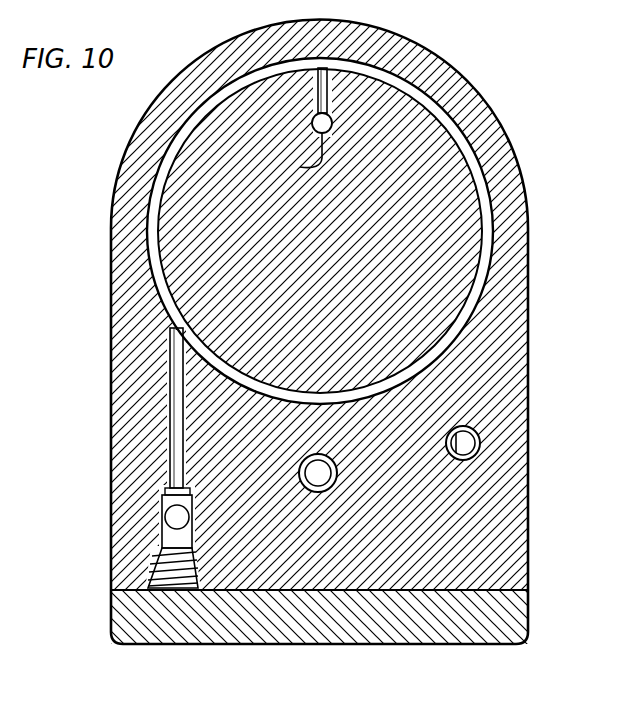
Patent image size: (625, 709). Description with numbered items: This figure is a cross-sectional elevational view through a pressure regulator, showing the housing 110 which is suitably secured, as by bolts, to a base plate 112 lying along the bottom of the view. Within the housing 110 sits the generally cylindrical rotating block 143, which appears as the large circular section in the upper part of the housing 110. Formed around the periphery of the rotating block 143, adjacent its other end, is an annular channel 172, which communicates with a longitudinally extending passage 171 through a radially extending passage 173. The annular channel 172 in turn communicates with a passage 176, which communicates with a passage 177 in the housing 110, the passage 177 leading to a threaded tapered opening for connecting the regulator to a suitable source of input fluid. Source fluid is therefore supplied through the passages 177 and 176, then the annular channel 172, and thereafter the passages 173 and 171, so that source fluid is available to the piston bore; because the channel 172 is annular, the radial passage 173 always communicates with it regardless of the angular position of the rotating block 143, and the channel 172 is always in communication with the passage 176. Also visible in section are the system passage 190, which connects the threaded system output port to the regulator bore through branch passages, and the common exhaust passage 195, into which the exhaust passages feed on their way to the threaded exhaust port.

The housing 110 is at (446, 77).
The base plate 112 is at (118, 608).
The rotating block 143 is at (452, 193).
The passage 171 is at (298, 145).
The annular channel 172 is at (487, 262).
The radially extending passage 173 is at (322, 107).
The passage 176 is at (180, 437).
The passage 177 is at (168, 515).
The system passage 190 is at (470, 446).
The common exhaust passage 195 is at (325, 473).